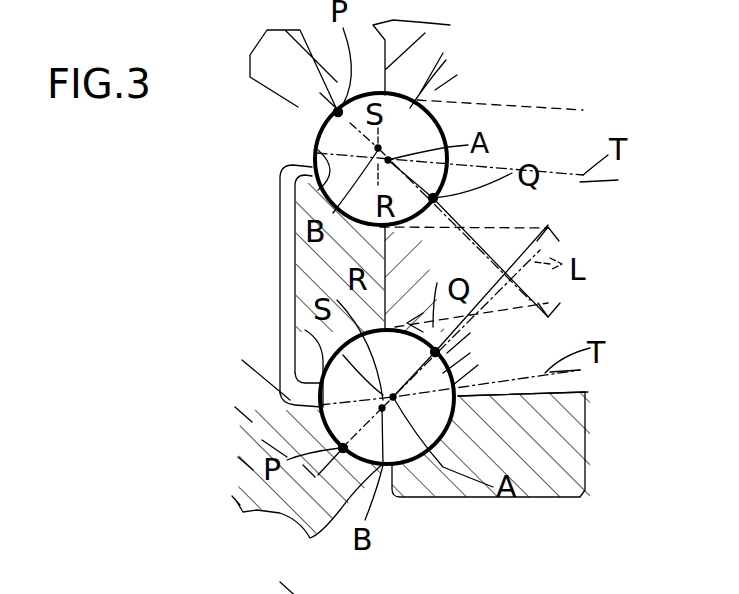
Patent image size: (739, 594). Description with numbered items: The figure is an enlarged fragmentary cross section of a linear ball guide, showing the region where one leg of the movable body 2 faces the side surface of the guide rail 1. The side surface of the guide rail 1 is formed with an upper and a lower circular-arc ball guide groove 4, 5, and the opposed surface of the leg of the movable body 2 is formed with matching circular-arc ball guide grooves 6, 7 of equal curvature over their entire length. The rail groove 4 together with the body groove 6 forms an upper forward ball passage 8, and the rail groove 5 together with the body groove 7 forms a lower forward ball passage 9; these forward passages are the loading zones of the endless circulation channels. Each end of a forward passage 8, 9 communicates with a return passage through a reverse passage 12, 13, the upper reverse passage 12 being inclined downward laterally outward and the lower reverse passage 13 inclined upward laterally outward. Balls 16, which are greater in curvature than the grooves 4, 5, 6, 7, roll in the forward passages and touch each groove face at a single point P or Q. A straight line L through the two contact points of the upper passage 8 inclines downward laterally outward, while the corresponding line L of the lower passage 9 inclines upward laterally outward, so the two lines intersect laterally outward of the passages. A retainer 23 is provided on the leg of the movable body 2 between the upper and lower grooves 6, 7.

The guide rail 1 is at (249, 55).
The movable body 2 is at (469, 88).
The ball guide groove 4 is at (327, 125).
The ball guide groove 5 is at (320, 410).
The ball guide groove 6 is at (447, 115).
The ball guide groove 7 is at (456, 402).
The forward ball passage 8 is at (313, 185).
The forward ball passage 9 is at (320, 355).
The reverse passage 12 is at (553, 240).
The reverse passage 13 is at (548, 303).
The balls 16 is at (253, 295).
The retainer 23 is at (303, 260).